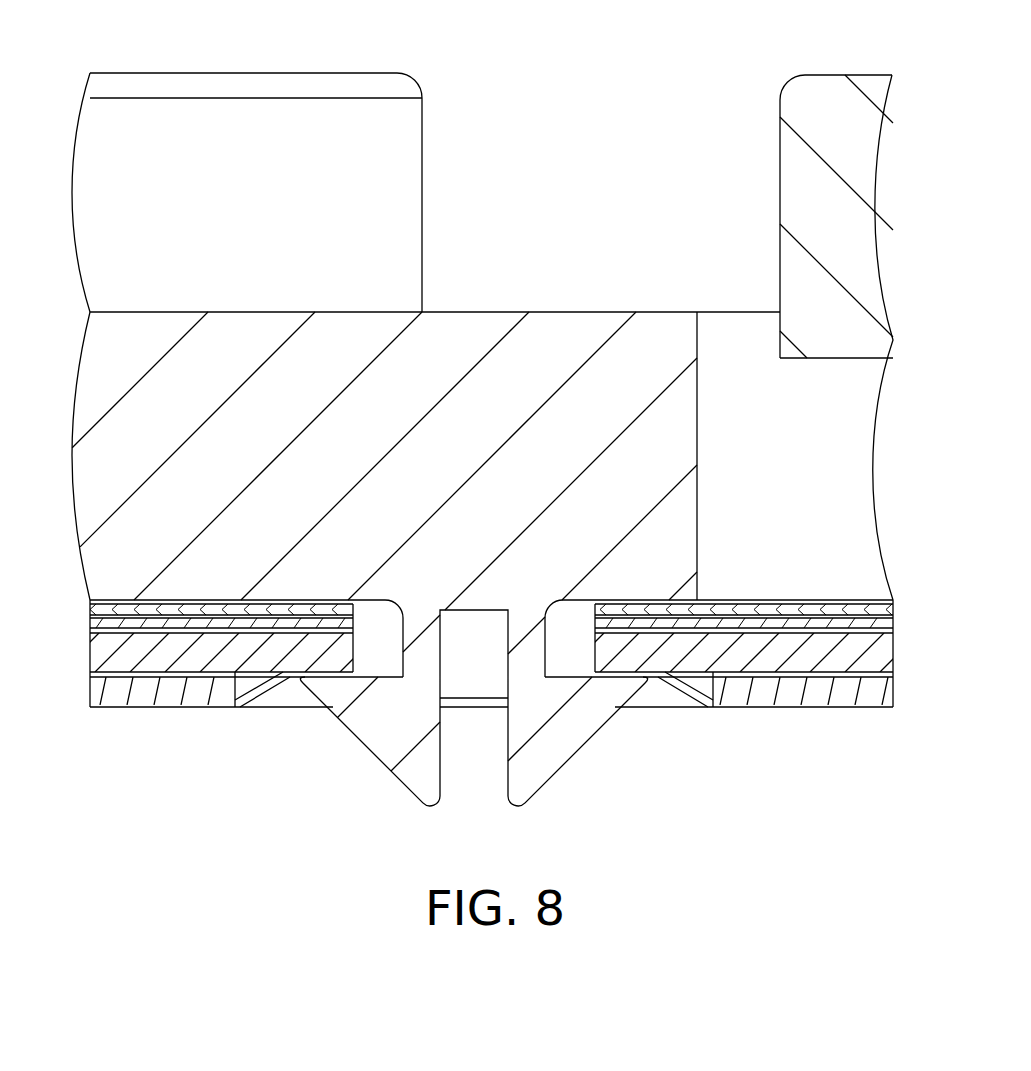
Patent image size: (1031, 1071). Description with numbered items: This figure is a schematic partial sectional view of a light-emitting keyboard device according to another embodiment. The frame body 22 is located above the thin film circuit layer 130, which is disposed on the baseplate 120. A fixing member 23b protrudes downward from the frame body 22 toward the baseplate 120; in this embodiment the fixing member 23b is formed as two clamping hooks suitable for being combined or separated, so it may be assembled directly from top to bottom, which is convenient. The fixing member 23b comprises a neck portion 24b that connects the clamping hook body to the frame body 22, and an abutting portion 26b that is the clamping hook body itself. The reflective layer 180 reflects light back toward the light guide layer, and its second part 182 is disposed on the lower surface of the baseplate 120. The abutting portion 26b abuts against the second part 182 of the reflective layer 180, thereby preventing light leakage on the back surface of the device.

The frame body 22 is at (683, 527).
The thin film circuit layer 130 is at (893, 608).
The baseplate 120 is at (885, 653).
The reflective layer 180 is at (685, 688).
The second part 182 is at (303, 680).
The neck portion 24b is at (427, 648).
The abutting portion 26b is at (384, 577).
The fixing member 23b is at (572, 738).